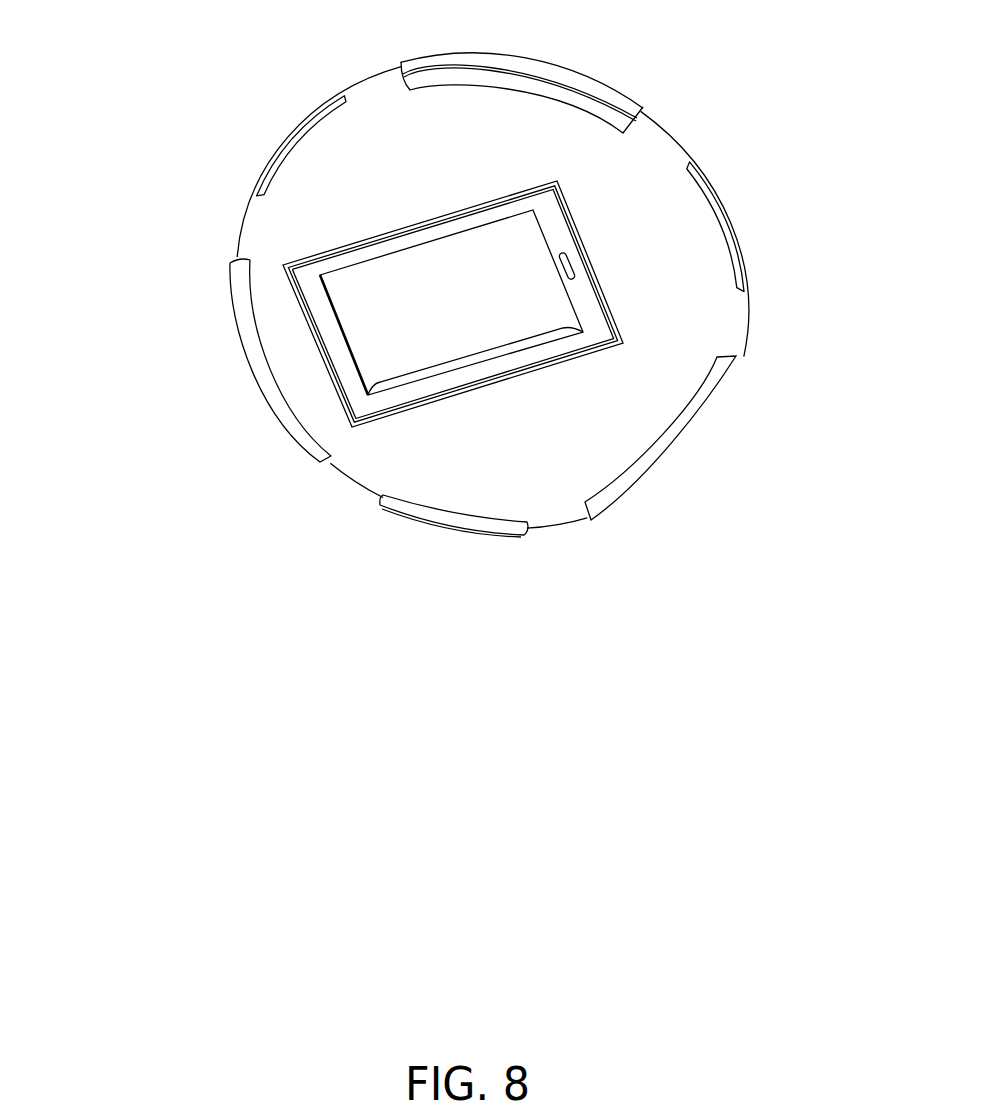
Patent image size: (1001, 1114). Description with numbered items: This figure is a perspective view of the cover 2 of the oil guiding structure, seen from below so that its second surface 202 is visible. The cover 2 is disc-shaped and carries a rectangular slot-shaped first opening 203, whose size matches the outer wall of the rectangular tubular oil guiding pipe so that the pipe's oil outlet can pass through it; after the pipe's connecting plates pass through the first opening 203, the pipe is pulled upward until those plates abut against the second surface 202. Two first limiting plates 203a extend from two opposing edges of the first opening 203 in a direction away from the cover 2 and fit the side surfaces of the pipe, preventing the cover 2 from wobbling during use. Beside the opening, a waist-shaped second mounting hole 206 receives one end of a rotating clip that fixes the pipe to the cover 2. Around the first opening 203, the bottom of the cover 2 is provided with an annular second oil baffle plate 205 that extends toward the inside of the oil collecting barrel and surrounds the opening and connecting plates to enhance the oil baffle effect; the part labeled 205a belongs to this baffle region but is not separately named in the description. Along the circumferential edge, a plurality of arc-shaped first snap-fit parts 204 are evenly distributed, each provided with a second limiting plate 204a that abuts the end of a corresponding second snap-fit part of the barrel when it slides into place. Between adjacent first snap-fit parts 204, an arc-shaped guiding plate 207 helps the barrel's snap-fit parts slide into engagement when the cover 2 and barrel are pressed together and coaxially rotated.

The cover 2 is at (670, 128).
The second surface 202 is at (385, 458).
The first opening 203 is at (458, 296).
The first limiting plates 203a is at (441, 372).
The first snap-fit parts 204 is at (726, 389).
The second limiting plate 204a is at (244, 264).
The second oil baffle plate 205 is at (343, 240).
The guide edge 205a is at (322, 356).
The second mounting hole 206 is at (579, 256).
The guiding plate 207 is at (443, 537).